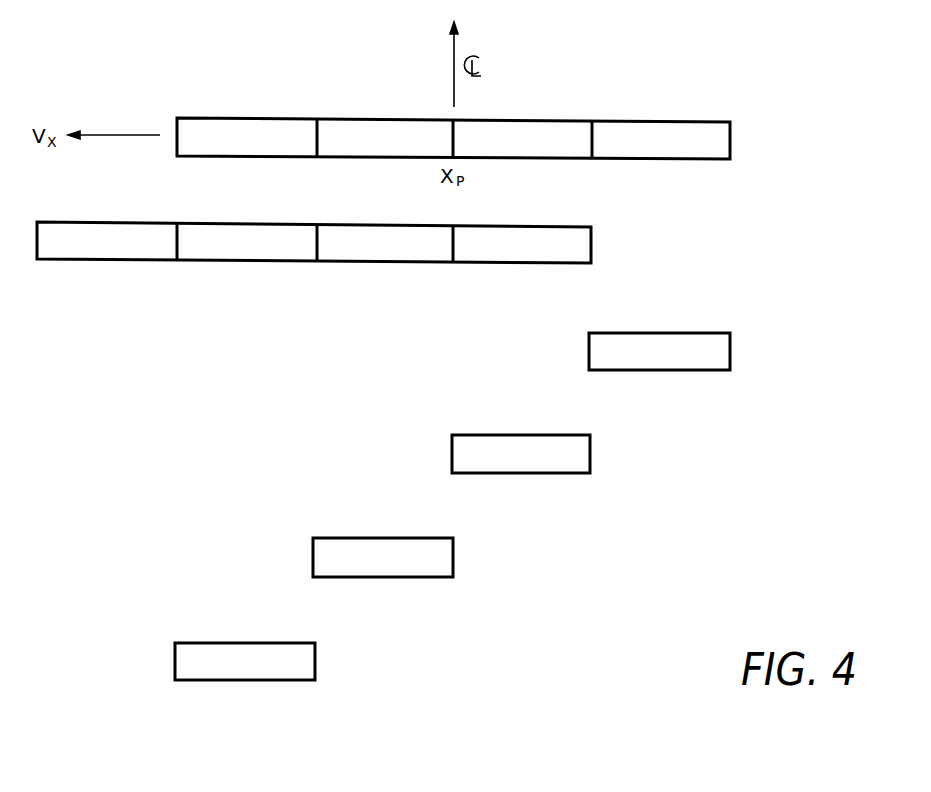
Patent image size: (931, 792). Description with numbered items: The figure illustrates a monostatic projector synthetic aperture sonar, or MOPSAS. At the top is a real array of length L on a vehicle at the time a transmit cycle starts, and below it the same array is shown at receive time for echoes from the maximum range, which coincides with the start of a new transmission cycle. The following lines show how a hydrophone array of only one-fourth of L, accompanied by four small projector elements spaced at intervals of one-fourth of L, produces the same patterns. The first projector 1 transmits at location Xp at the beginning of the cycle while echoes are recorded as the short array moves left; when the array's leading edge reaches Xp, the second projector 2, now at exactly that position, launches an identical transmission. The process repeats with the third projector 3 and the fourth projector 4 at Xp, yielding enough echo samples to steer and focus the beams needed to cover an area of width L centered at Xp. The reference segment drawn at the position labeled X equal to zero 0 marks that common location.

The projector T1 1 is at (314, 308).
The reference segment at X= 0 is at (727, 347).
The projector T2 2 is at (515, 483).
The projector T3 3 is at (389, 586).
The projector T4 4 is at (320, 691).